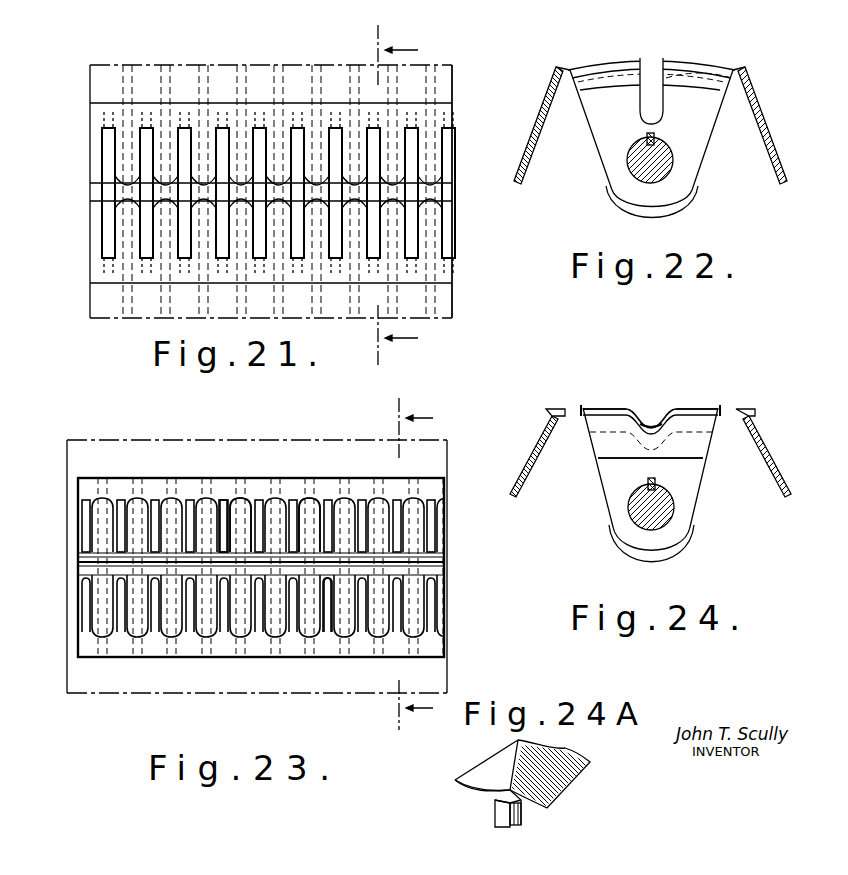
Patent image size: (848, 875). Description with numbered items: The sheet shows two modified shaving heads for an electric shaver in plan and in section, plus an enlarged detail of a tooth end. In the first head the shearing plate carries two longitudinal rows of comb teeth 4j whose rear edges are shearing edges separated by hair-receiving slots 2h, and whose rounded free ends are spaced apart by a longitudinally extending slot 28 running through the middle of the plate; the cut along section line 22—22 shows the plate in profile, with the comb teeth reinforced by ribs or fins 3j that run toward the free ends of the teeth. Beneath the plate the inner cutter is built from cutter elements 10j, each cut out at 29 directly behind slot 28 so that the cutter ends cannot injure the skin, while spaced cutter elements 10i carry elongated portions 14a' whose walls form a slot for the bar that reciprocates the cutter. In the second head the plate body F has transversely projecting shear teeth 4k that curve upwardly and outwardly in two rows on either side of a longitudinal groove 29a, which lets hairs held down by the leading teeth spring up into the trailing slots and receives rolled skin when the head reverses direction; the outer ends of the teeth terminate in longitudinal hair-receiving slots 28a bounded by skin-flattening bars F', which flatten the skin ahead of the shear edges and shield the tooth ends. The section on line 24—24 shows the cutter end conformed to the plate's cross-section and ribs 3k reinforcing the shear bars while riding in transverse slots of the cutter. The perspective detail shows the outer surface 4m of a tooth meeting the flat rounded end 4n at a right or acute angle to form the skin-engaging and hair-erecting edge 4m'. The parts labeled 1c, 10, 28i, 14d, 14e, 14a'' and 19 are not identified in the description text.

In FIG. 21, the body of the shearing member F is at (271, 176).
In FIG. 23, the skin-flattening bars F' is at (257, 561).
In FIG. 24, the skin-flattening bars F' is at (651, 435).
In FIG. 21, the frame member 1c is at (140, 105).
In FIG. 21, the cut out of the cutter elements 29 is at (284, 132).
In FIG. 22, the cut out of the cutter elements 29 is at (666, 66).
In FIG. 23, the longitudinal groove 29a is at (420, 566).
In FIG. 24, the longitudinal groove 29a is at (650, 422).
In FIG. 21, the comb teeth 4j is at (433, 163).
In FIG. 22, the comb teeth 4j is at (608, 62).
In FIG. 23, the shear teeth 4k is at (432, 606).
In FIG. 24, the shear teeth 4k is at (685, 408).
In FIG. 24A, the shear teeth 4k is at (496, 748).
In FIG. 23, the outer surface of the shear teeth 4m is at (272, 479).
In FIG. 24A, the outer surface of the shear teeth 4m is at (557, 770).
In FIG. 24A, the skin-engaging and hair-engaging edge 4m' is at (469, 796).
In FIG. 23, the rounded ends of the shear teeth 4n is at (232, 500).
In FIG. 24A, the rounded ends of the shear teeth 4n is at (520, 804).
In FIG. 21, the slat body 10 is at (411, 226).
In FIG. 21, the cutter elements 10i is at (162, 200).
In FIG. 22, the cutter elements 10i is at (590, 78).
In FIG. 23, the cutter elements 10j is at (432, 532).
In FIG. 24, the cutter elements 10j is at (700, 438).
In FIG. 22, the longitudinally extending slot 28 is at (650, 58).
In FIG. 21, the rim 28i is at (445, 198).
In FIG. 23, the longitudinally extending hair-receiving slots 28a is at (430, 488).
In FIG. 24, the longitudinally extending hair-receiving slots 28a is at (570, 406).
In FIG. 21, the section line 22— 22 is at (398, 195).
In FIG. 23, the section line 24— 24 is at (416, 565).
In FIG. 22, the ribs or fins 3j is at (685, 70).
In FIG. 23, the ribs 3k is at (358, 580).
In FIG. 24, the ribs 3k is at (600, 418).
In FIG. 24A, the ribs 3k is at (497, 814).
In FIG. 23, the hair-receiving slots 2h is at (333, 510).
In FIG. 24, the hair-receiving slots 2h is at (625, 410).
In FIG. 22, the body 14d is at (694, 118).
In FIG. 24, the body 14e is at (692, 475).
In FIG. 22, the elongated portions of the cutter elements 14a' is at (671, 206).
In FIG. 24, the outer wall 14a'' is at (673, 544).
In FIG. 22, the rod 19 is at (632, 165).
In FIG. 24, the rod 19 is at (662, 510).